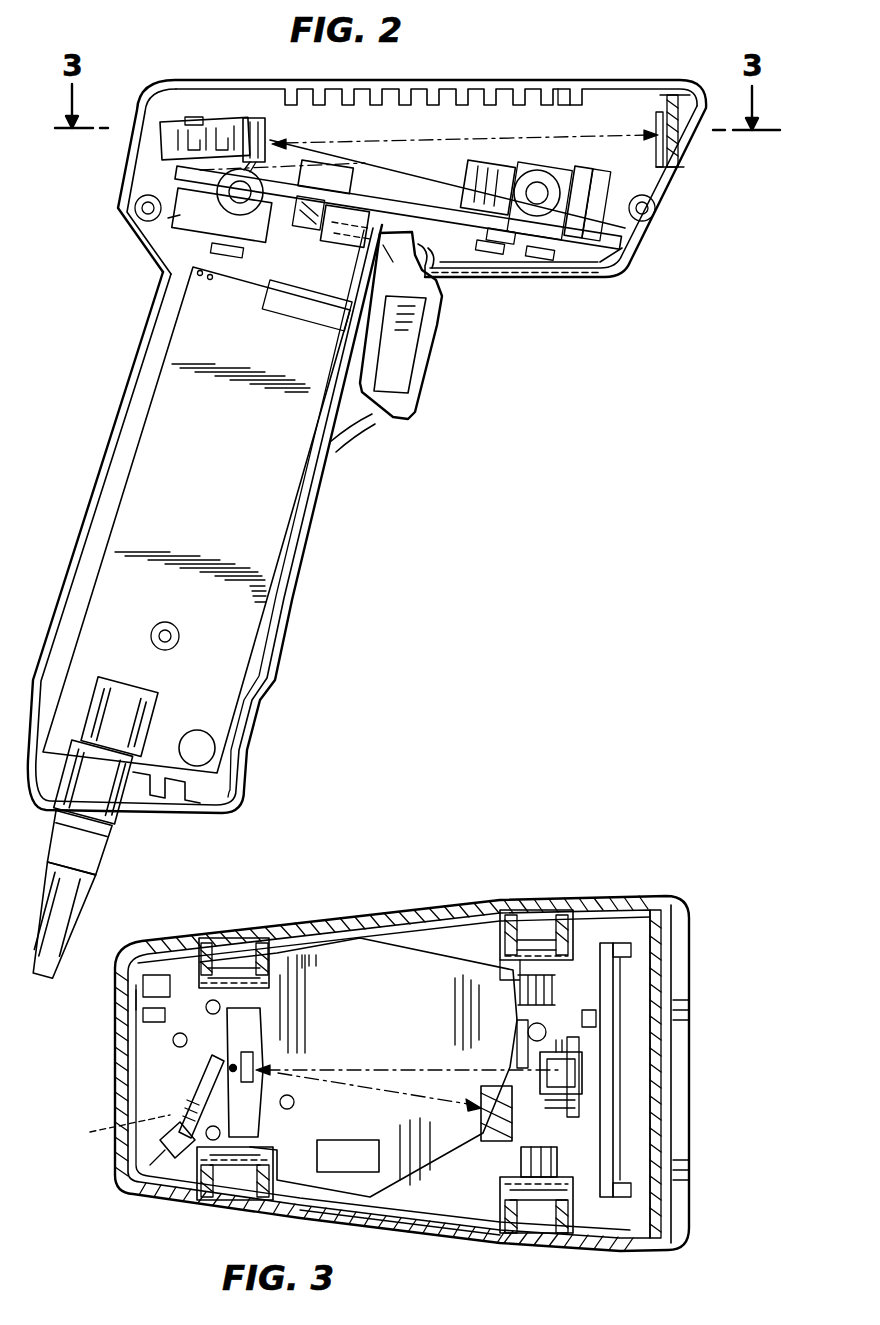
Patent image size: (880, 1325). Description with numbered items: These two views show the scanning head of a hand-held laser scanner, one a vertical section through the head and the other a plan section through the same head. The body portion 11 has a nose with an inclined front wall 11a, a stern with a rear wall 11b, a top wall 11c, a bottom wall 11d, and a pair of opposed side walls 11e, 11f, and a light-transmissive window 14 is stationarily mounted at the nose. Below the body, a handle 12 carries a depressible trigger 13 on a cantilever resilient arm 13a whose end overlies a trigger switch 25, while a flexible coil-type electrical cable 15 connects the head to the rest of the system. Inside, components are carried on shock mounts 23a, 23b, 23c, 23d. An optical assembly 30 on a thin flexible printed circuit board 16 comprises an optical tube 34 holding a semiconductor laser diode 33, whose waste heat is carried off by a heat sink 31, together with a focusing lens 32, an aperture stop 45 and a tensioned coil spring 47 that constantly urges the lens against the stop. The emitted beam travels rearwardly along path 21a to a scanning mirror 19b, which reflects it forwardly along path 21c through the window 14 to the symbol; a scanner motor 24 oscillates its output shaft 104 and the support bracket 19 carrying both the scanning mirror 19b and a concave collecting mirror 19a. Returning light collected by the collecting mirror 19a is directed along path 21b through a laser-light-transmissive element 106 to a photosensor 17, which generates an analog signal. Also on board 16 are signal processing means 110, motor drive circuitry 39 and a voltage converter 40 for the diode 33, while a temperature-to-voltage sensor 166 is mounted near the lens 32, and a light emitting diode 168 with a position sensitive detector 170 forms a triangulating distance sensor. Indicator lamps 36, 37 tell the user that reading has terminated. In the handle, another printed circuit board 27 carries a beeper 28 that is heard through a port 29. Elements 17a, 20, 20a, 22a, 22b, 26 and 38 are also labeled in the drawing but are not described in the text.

In FIG. 2, the body portion 11 is at (531, 60).
In FIG. 2, the inclined front wall 11a is at (640, 257).
In FIG. 2, the rear wall 11b is at (127, 160).
In FIG. 3, the rear wall 11b is at (120, 990).
In FIG. 2, the top wall 11c is at (425, 78).
In FIG. 2, the bottom wall 11d is at (527, 287).
In FIG. 3, the side wall 11e is at (474, 908).
In FIG. 3, the side wall 11f is at (417, 1238).
In FIG. 2, the handle 12 is at (88, 514).
In FIG. 2, the trigger 13 is at (410, 415).
In FIG. 2, the cantilever resilient arm 13a is at (376, 250).
In FIG. 2, the window 14 is at (681, 143).
In FIG. 3, the window 14 is at (667, 924).
In FIG. 2, the coil-type electrical cable 15 is at (84, 887).
In FIG. 2, the printed circuit board 16 is at (475, 216).
In FIG. 3, the printed circuit board 16 is at (424, 1006).
In FIG. 2, the photosensor 17 is at (514, 240).
In FIG. 3, the photosensor 17 is at (489, 1246).
In FIG. 3, the bracket arm 17a is at (465, 1135).
In FIG. 2, the support bracket 19 is at (252, 116).
In FIG. 3, the support bracket 19 is at (228, 1030).
In FIG. 3, the collecting mirror 19a is at (252, 1030).
In FIG. 3, the scanning mirror 19b is at (252, 1060).
In FIG. 2, the lever 20 is at (219, 112).
In FIG. 3, the lever 20 is at (175, 1095).
In FIG. 2, the lever tab 20a is at (196, 122).
In FIG. 2, the first optical path 21a is at (309, 180).
In FIG. 3, the first optical path 21a is at (427, 1069).
In FIG. 3, the second optical path 21b is at (413, 1106).
In FIG. 2, the optical path 21c is at (513, 140).
In FIG. 3, the lever end position 22a is at (150, 1165).
In FIG. 3, the lever alternate position 22b is at (107, 1130).
In FIG. 3, the shock mount 23a is at (257, 938).
In FIG. 3, the shock mount 23b is at (565, 905).
In FIG. 2, the shock mount 23c is at (238, 191).
In FIG. 3, the shock mount 23c is at (200, 1203).
In FIG. 2, the shock mount 23d is at (538, 190).
In FIG. 3, the shock mount 23d is at (563, 1247).
In FIG. 2, the scanner motor 24 is at (193, 230).
In FIG. 2, the trigger switch 25 is at (318, 238).
In FIG. 2, the vent slot 26 is at (564, 96).
In FIG. 2, the printed circuit board 27 is at (219, 490).
In FIG. 2, the beeper 28 is at (202, 748).
In FIG. 2, the port 29 is at (187, 793).
In FIG. 3, the optical assembly 30 is at (592, 1070).
In FIG. 2, the heat sink 31 is at (611, 280).
In FIG. 3, the heat sink 31 is at (613, 969).
In FIG. 3, the focusing lens 32 is at (568, 1050).
In FIG. 3, the semiconductor laser diode 33 is at (582, 1092).
In FIG. 3, the optical tube 34 is at (555, 1124).
In FIG. 3, the indicator lamp 36 is at (155, 972).
In FIG. 3, the indicator lamp 37 is at (143, 1022).
In FIG. 2, the wall 38 is at (443, 288).
In FIG. 2, the drive circuitry component 39 is at (492, 262).
In FIG. 2, the voltage converter 40 is at (556, 260).
In FIG. 3, the aperture stop 45 is at (517, 1070).
In FIG. 3, the tensioned coil spring 47 is at (588, 1050).
In FIG. 2, the output shaft 104 is at (213, 250).
In FIG. 3, the output shaft 104 is at (226, 1052).
In FIG. 2, the laser-light-transmissive element 106 is at (482, 167).
In FIG. 3, the laser-light-transmissive element 106 is at (252, 1016).
In FIG. 2, the signal processing means 110 is at (336, 170).
In FIG. 3, the signal processing means 110 is at (348, 1143).
In FIG. 3, the temperature-to-voltage sensor 166 is at (530, 1028).
In FIG. 3, the light emitting diode 168 is at (622, 940).
In FIG. 3, the position sensitive detector 170 is at (623, 1198).